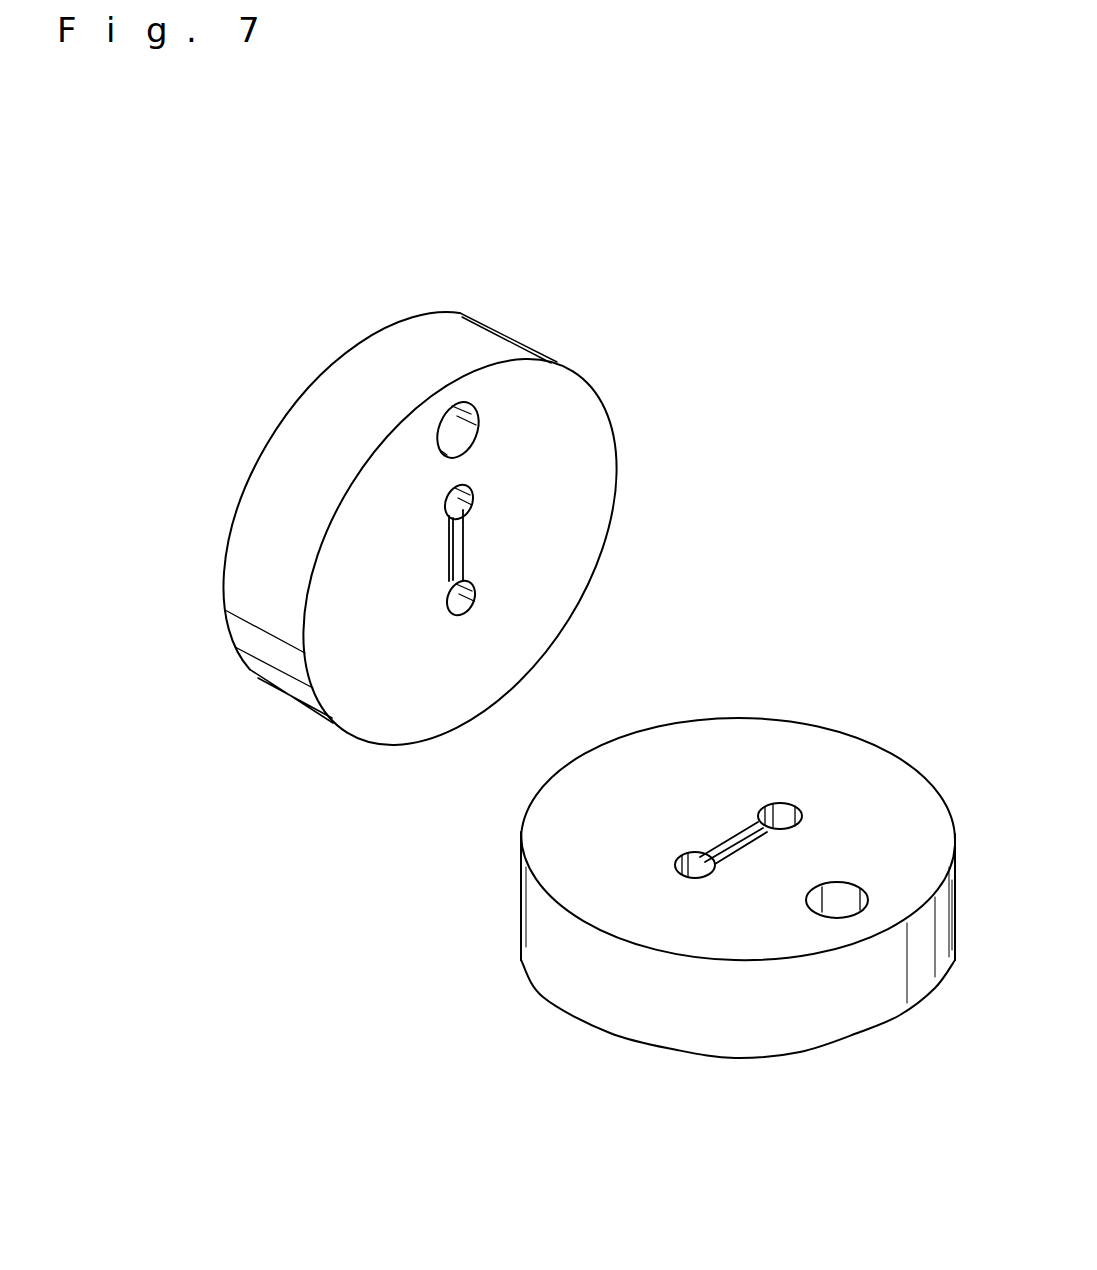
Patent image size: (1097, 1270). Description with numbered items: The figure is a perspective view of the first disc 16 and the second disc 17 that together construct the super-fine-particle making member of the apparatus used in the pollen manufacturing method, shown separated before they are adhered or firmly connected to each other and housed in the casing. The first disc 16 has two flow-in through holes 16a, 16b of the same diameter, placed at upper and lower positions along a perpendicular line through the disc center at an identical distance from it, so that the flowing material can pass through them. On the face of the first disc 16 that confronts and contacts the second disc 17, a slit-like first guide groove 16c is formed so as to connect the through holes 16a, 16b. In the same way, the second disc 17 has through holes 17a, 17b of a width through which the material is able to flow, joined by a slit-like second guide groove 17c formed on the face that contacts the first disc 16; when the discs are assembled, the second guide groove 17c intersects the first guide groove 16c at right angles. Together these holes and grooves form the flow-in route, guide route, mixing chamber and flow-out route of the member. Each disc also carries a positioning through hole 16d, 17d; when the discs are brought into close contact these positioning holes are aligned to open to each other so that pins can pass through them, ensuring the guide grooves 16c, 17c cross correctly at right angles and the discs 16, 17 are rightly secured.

The first disc 16 is at (438, 298).
The flow-in through hole 16a is at (473, 505).
The flow-in through hole 16b is at (467, 622).
The first guide groove 16c is at (460, 542).
The positioning through hole 16d is at (460, 436).
The second disc 17 is at (652, 1060).
The through hole 17a is at (682, 867).
The through hole 17b is at (783, 815).
The second guide groove 17c is at (735, 835).
The positioning through hole 17d is at (838, 905).